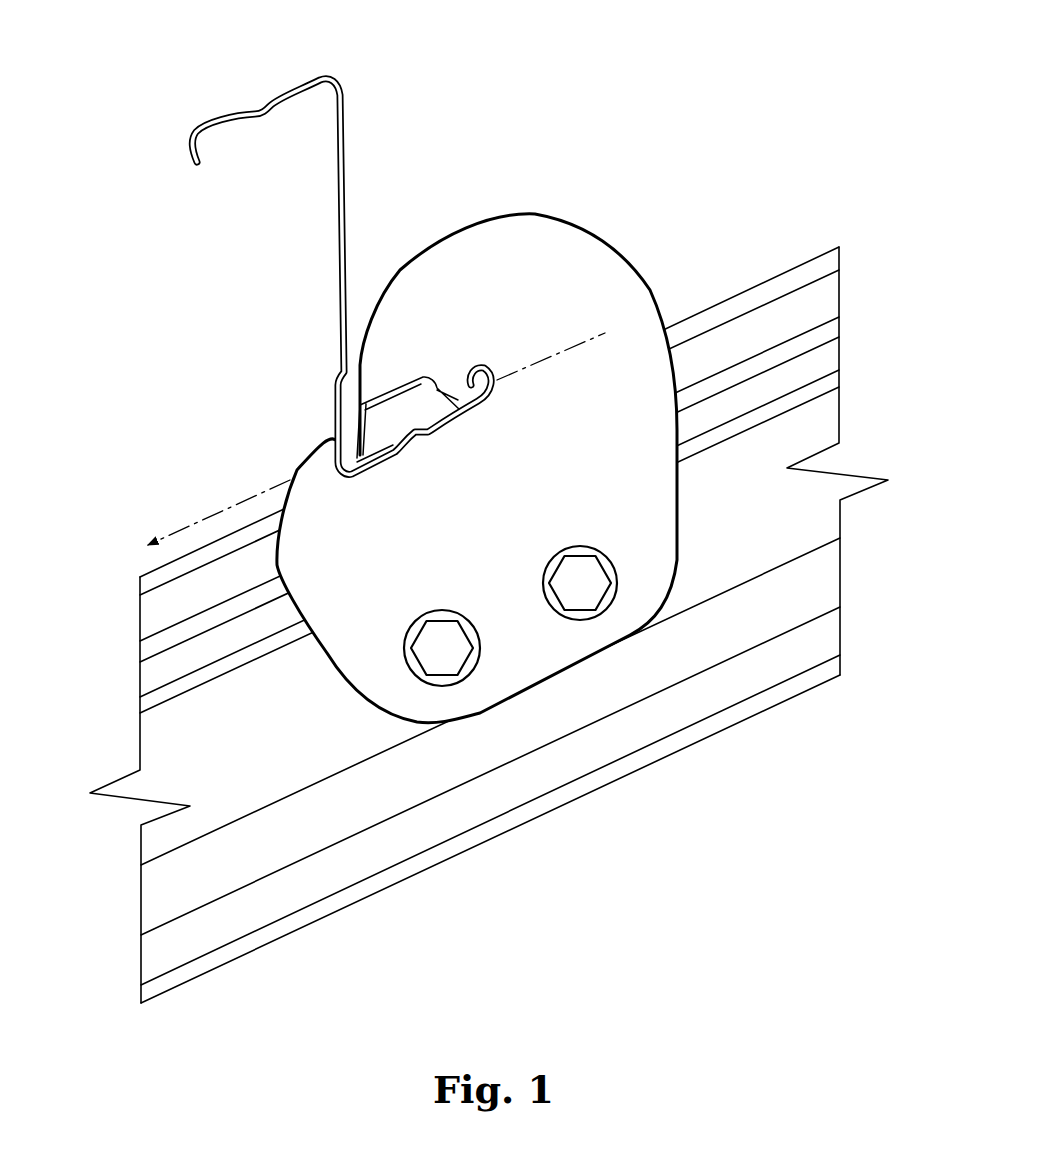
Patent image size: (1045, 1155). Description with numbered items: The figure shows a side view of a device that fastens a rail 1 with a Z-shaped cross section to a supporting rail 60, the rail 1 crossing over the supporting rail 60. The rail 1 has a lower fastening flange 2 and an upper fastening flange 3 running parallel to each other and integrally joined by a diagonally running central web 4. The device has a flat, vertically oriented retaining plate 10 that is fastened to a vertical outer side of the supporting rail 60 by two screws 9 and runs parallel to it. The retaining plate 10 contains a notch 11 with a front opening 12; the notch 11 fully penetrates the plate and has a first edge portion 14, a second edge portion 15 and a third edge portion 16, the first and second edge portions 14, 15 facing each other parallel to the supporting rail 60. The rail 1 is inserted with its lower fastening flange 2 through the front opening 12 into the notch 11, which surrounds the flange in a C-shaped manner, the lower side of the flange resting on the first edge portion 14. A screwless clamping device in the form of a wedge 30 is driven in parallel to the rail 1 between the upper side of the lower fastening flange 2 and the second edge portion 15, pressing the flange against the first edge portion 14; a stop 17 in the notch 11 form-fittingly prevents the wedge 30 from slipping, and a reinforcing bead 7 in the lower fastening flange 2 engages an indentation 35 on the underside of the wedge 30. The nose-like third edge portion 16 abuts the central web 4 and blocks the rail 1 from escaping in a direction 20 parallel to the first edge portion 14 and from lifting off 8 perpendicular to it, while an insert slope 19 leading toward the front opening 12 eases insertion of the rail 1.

The rail 1 is at (368, 98).
The lower fastening flange 2 is at (452, 435).
The upper fastening flange 3 is at (215, 125).
The central web 4 is at (372, 277).
The reinforcing bead 7 is at (410, 430).
The lifting off 8 is at (216, 12).
The screws 9 is at (475, 656).
The retaining plate 10 is at (585, 245).
The notch 11 is at (497, 383).
The front opening 12 is at (340, 422).
The first edge portion 14 is at (418, 455).
The second edge portion 15 is at (392, 383).
The third edge portion 16 is at (333, 455).
The stop 17 is at (447, 387).
The insert slope 19 is at (318, 457).
The direction 20 is at (222, 513).
The wedge 30 is at (425, 400).
The indentation 35 is at (410, 435).
The supporting rail 60 is at (748, 750).